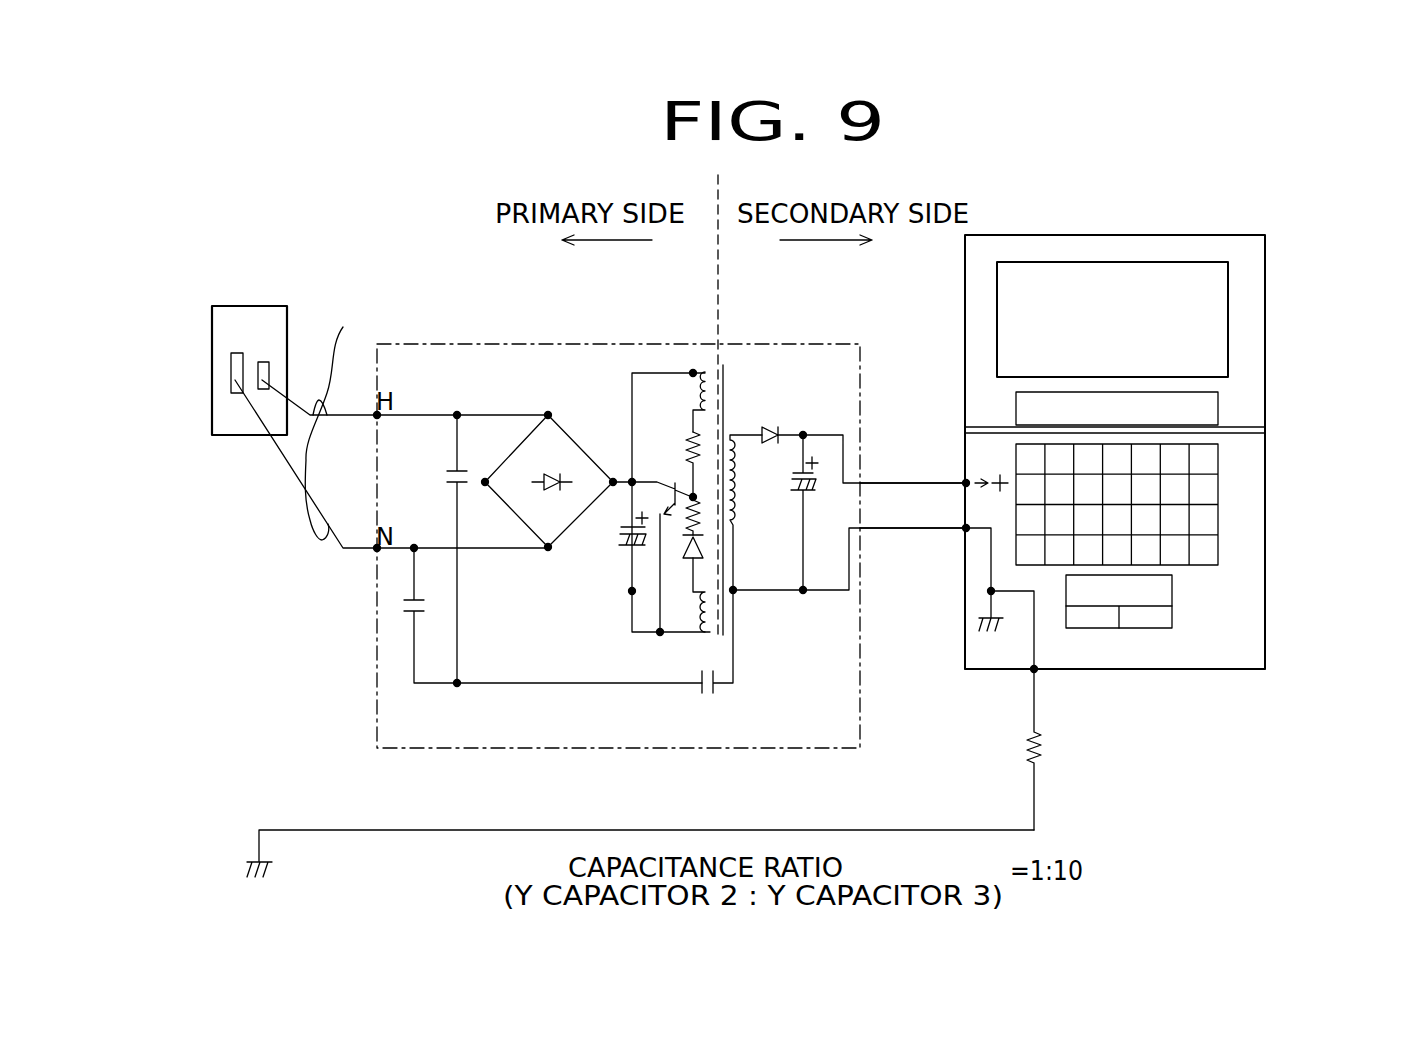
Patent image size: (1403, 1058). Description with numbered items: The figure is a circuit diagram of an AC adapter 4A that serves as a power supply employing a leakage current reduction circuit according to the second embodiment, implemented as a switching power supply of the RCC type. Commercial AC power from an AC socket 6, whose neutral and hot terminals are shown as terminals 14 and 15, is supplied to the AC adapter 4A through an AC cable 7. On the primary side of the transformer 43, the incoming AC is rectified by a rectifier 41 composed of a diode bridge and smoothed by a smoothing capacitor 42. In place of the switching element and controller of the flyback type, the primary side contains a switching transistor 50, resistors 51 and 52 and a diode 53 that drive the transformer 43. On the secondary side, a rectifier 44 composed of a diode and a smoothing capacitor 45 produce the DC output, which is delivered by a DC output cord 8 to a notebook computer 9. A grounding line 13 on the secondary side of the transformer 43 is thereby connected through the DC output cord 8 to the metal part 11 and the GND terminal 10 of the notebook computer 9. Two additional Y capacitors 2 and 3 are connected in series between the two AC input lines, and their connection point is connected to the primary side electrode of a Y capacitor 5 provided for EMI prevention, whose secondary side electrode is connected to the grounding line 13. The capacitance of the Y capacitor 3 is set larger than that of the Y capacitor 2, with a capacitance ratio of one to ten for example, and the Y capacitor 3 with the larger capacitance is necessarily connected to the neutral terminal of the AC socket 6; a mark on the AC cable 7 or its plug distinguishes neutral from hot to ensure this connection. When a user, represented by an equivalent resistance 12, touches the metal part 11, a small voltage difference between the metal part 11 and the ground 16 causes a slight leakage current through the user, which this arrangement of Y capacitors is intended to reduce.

The Y capacitor 2 is at (452, 460).
The Y capacitor 3 is at (403, 610).
The AC adapter 4A is at (543, 342).
The Y capacitor 5 is at (747, 710).
The AC socket 6 is at (288, 272).
The AC cable 7 is at (356, 423).
The DC output cord 8 is at (913, 480).
The notebook computer 9 is at (1266, 372).
The GND terminal 10 is at (991, 598).
The metal part 11 is at (1034, 672).
The equivalent resistance 12 is at (1047, 758).
The grounding line 13 is at (908, 530).
The neutral terminal 14 is at (235, 415).
The hot terminal 15 is at (270, 387).
The ground 16 is at (660, 830).
The rectifier 41 is at (488, 477).
The smoothing capacitor 42 is at (623, 538).
The transformer 43 is at (725, 370).
The rectifier 44 is at (770, 425).
The smoothing capacitor 45 is at (808, 492).
The switching transistor 50 is at (660, 590).
The resistor 51 is at (682, 440).
The resistor 52 is at (707, 522).
The diode 53 is at (690, 567).